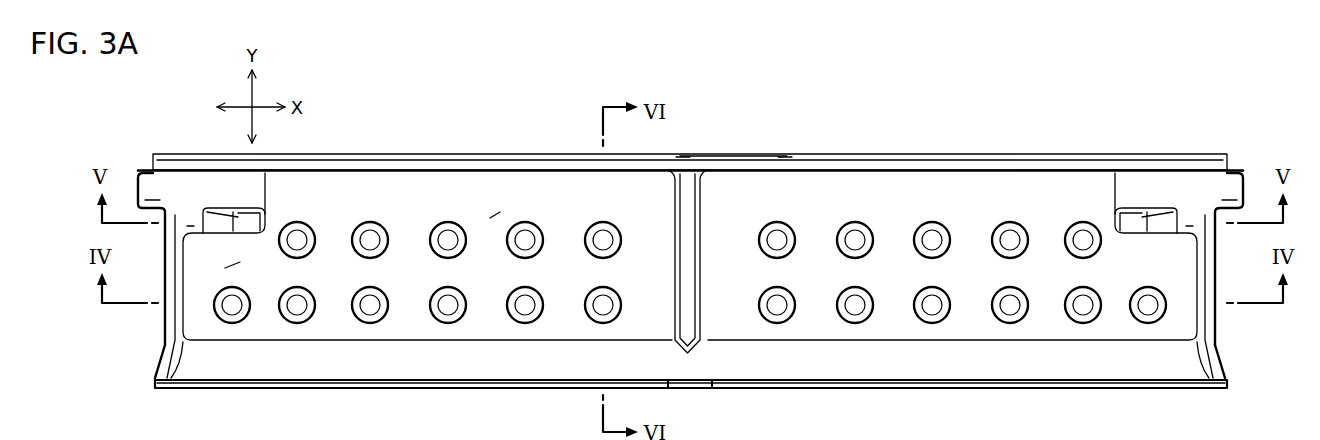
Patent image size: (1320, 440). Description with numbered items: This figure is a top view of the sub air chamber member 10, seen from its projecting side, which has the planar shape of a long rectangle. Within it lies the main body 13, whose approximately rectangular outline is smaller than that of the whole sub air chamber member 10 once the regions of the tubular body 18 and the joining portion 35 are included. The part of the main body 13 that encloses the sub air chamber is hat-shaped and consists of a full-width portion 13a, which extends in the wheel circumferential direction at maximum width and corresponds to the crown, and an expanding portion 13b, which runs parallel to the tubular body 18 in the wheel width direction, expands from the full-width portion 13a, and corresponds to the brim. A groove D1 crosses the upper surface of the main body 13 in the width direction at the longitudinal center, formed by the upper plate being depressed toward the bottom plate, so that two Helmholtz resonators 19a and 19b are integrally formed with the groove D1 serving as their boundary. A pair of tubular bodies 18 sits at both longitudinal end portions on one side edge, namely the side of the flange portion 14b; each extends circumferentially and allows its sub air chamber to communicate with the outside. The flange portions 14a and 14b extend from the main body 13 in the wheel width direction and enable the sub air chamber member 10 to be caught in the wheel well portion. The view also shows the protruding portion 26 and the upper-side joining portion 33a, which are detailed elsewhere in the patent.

The sub air chamber member 10 is at (787, 112).
The main body 13 is at (335, 112).
The full-width portion 13a is at (495, 215).
The expanding portion 13b is at (232, 265).
The flange portion 14a is at (870, 387).
The flange portion 14b is at (873, 160).
The tubular body 18 is at (176, 198).
The Helmholtz resonator 19a is at (682, 156).
The Helmholtz resonator 19b is at (787, 156).
The protruding portion 26 is at (692, 382).
The upper-side joining portion 33a is at (525, 305).
The joining portion 35 is at (190, 224).
The groove D1 is at (690, 255).